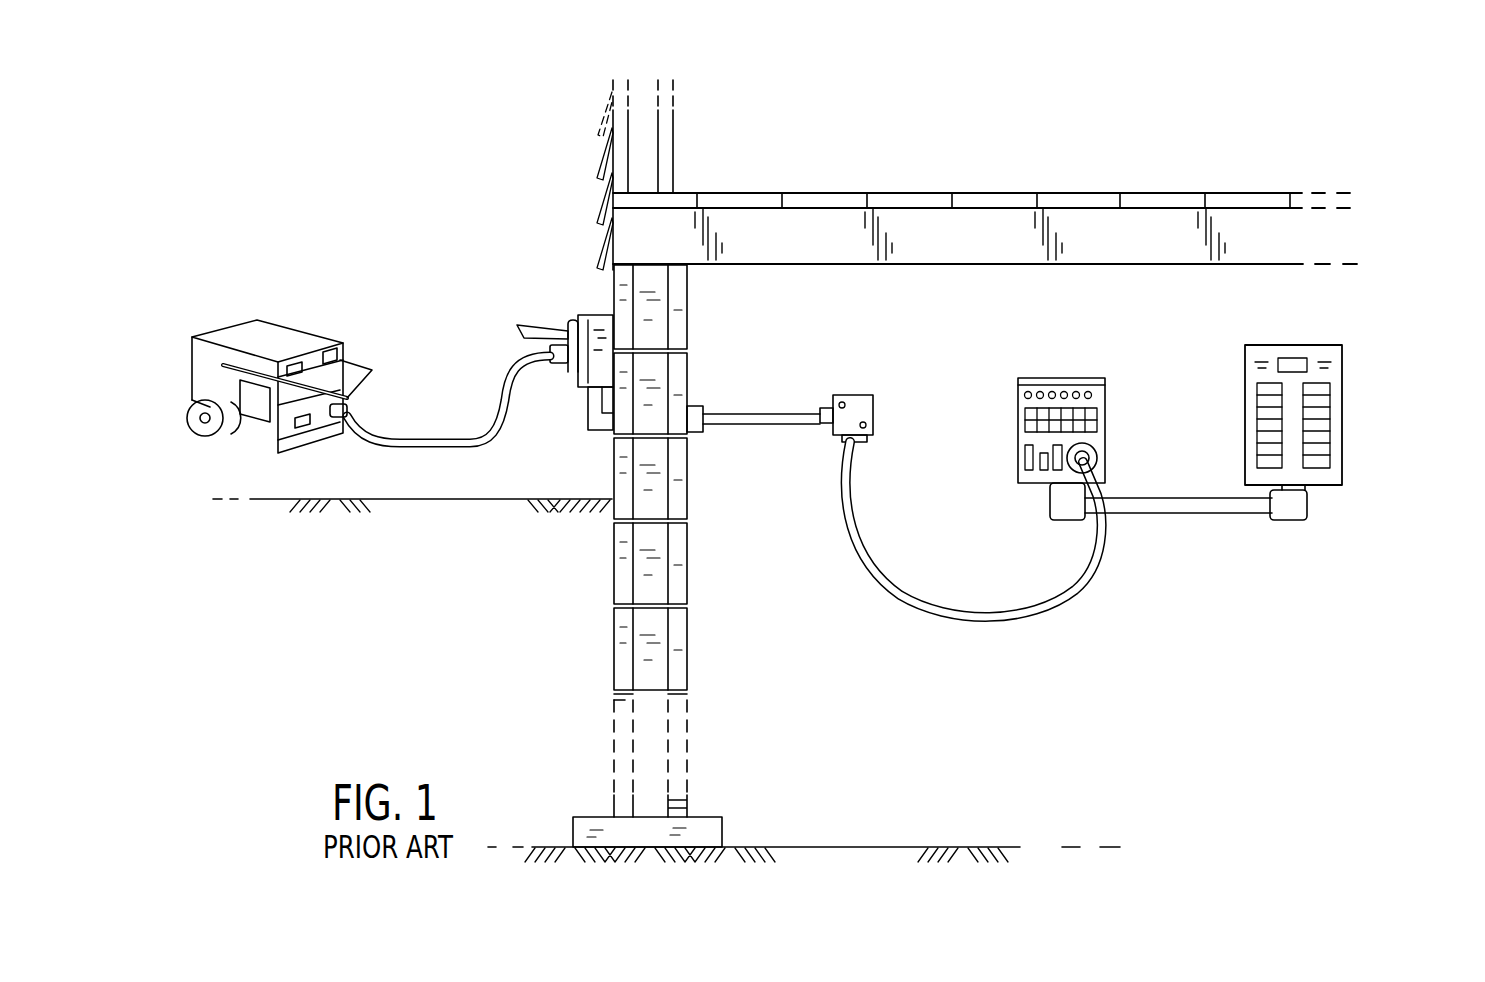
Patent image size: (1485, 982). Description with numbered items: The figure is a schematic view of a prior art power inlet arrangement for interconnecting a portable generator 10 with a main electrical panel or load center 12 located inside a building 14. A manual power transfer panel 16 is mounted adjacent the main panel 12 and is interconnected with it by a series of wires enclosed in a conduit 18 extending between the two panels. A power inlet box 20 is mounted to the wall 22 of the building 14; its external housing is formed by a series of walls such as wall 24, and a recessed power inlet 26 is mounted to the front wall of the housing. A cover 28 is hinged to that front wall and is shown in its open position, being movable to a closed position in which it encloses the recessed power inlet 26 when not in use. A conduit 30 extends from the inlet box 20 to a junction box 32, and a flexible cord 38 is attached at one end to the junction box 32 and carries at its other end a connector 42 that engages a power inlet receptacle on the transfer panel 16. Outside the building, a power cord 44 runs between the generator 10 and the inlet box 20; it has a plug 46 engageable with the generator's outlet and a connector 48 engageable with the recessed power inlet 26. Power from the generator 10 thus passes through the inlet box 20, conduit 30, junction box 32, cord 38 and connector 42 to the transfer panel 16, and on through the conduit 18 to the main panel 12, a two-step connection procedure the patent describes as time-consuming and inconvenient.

The portable generator 10 is at (338, 255).
The main electrical panel 12 is at (1370, 362).
The building 14 is at (543, 132).
The manual power transfer panel 16 is at (1068, 348).
The conduit 18 is at (1220, 513).
The power inlet box 20 is at (553, 283).
The wall 22 is at (610, 457).
The wall of housing 24 is at (597, 378).
The recessed power inlet 26 is at (575, 375).
The cover 28 is at (537, 327).
The conduit 30 is at (760, 412).
The junction box 32 is at (853, 395).
The flexible cord 38 is at (1000, 630).
The connector 42 is at (1102, 453).
The power cord 44 is at (430, 450).
The plug 46 is at (350, 407).
The connector 48 is at (557, 366).